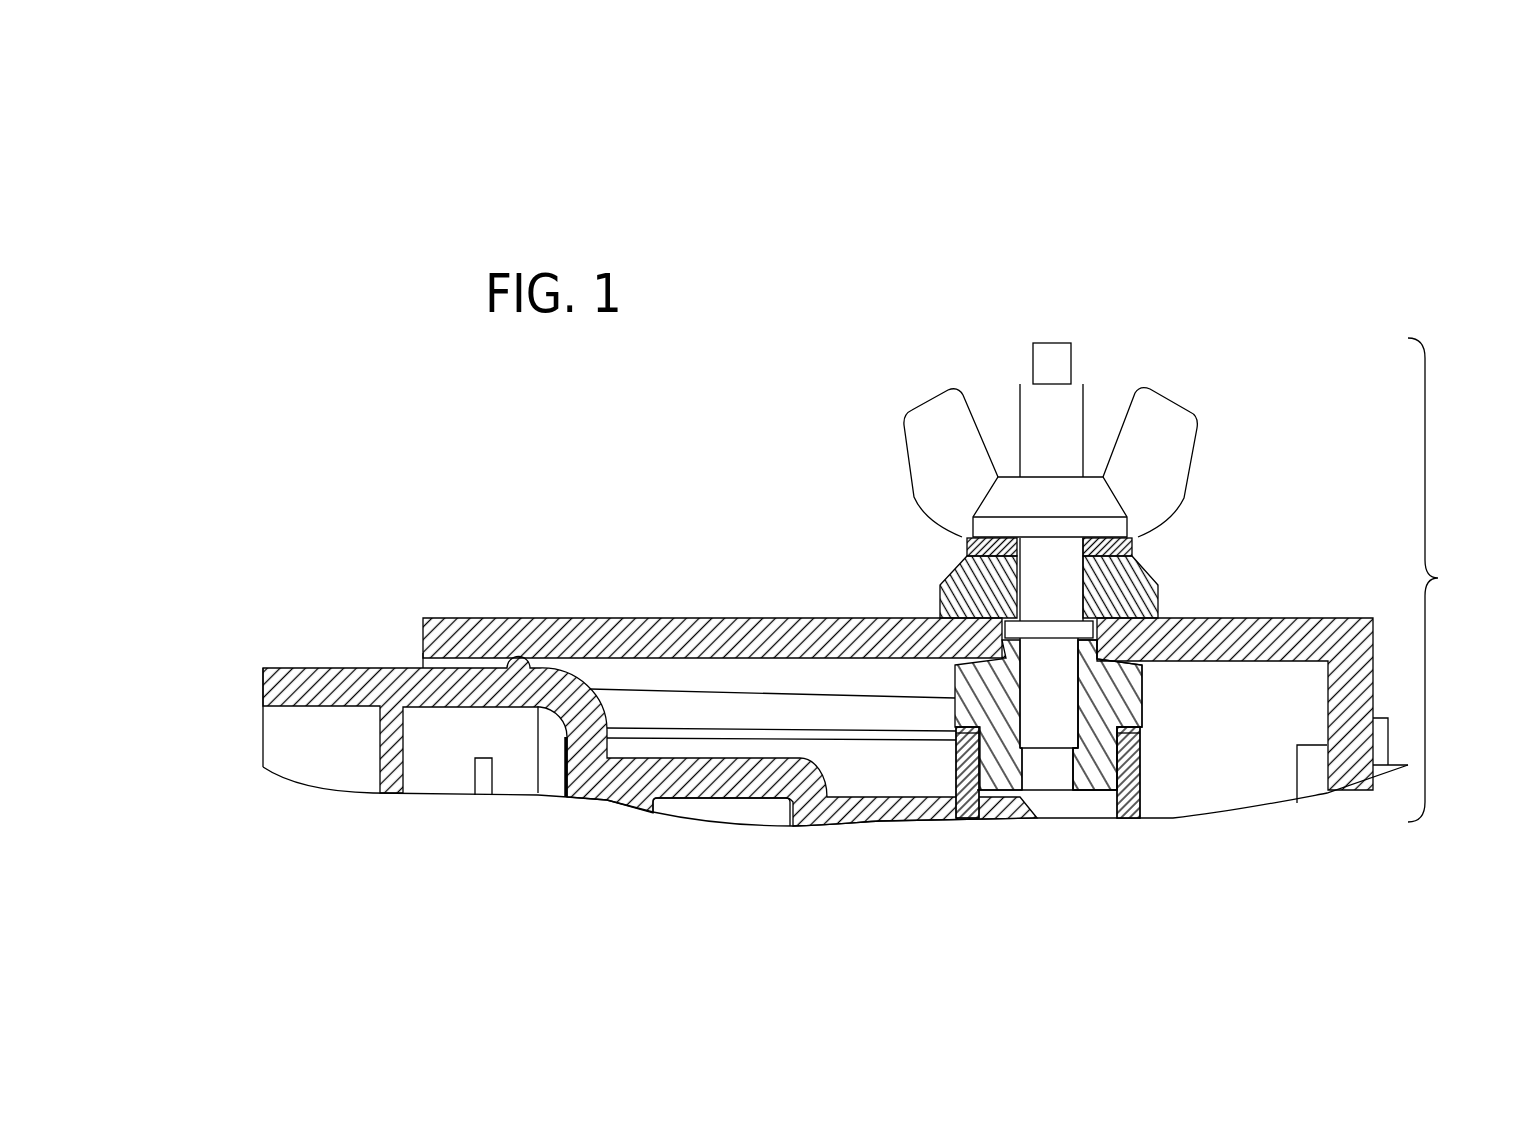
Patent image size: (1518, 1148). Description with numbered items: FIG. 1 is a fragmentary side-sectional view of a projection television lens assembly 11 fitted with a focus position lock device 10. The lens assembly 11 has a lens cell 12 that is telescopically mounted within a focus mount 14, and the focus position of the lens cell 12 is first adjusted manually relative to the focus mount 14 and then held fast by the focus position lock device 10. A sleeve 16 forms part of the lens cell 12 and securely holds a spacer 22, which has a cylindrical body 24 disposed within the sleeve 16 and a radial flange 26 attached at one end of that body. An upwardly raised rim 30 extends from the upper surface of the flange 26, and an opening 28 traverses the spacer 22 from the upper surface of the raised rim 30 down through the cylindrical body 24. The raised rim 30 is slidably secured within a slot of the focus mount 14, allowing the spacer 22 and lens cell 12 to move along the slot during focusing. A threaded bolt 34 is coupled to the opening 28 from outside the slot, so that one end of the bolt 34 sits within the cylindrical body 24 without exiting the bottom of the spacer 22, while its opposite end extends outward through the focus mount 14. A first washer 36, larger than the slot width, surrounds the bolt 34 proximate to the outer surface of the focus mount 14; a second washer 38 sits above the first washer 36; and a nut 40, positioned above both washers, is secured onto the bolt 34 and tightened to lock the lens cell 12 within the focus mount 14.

The focus position lock device 10 is at (1452, 580).
The projection television lens assembly 11 is at (240, 732).
The lens cell 12 is at (357, 668).
The focus mount 14 is at (633, 617).
The sleeve 16 is at (1143, 768).
The spacer 22 is at (1153, 683).
The cylindrical body 24 is at (997, 765).
The radial flange 26 is at (1122, 705).
The opening 28 is at (1048, 778).
The raised rim 30 is at (1003, 655).
The threaded bolt 34 is at (1064, 374).
The first washer 36 is at (1162, 600).
The second washer 38 is at (1136, 548).
The nut 40 is at (1180, 392).